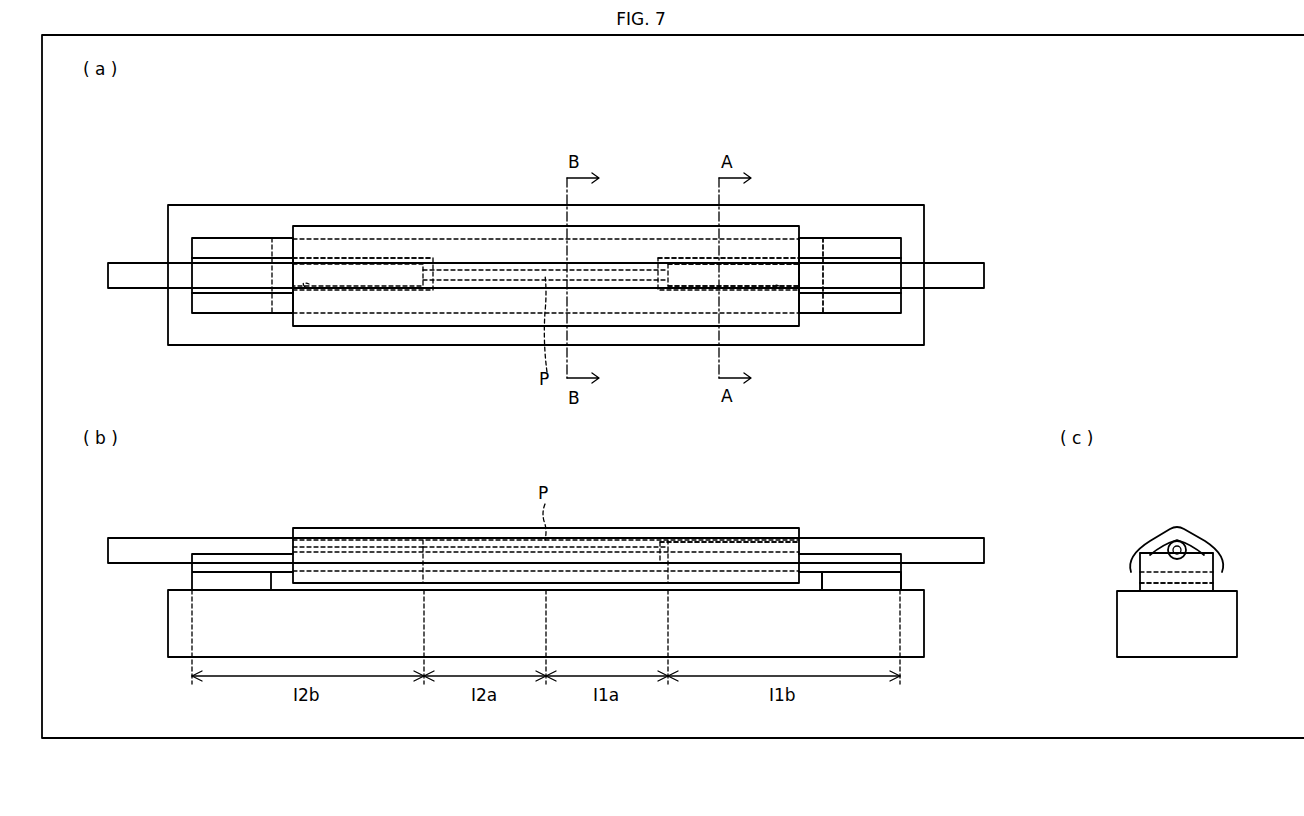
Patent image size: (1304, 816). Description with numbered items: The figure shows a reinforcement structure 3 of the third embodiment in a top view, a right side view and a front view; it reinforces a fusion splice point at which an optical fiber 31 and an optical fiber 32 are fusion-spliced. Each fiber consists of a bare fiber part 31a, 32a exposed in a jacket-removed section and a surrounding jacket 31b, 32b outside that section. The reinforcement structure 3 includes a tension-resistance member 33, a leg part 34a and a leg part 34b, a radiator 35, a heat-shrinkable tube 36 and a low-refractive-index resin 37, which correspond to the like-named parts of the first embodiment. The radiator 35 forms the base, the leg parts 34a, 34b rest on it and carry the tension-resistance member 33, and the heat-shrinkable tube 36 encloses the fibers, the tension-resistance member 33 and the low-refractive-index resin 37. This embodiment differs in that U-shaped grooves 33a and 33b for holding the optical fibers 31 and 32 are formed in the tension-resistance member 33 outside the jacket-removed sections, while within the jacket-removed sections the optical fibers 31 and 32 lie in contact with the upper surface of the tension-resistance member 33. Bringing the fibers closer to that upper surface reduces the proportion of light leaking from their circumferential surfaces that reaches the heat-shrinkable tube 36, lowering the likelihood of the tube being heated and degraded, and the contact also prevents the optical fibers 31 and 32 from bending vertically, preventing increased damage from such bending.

The reinforcement structure 3 is at (955, 186).
The optical fiber 31 is at (708, 164).
The bare fiber part 31a is at (642, 258).
The jacket 31b is at (688, 264).
The optical fiber 32 is at (475, 164).
The bare fiber part 32a is at (455, 270).
The jacket 32b is at (410, 258).
The tension-resistance member 33 is at (812, 238).
The U-shaped groove 33a is at (773, 289).
The U-shaped groove 33b is at (305, 290).
The leg part 34a is at (855, 238).
The leg part 34b is at (228, 238).
The radiator 35 is at (768, 205).
The heat-shrinkable tube 36 is at (333, 226).
The low-refractive-index resin 37 is at (1148, 550).